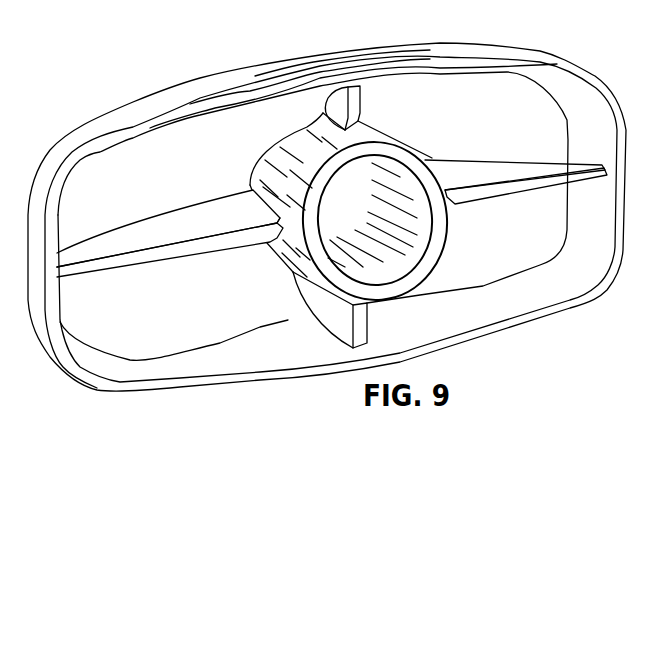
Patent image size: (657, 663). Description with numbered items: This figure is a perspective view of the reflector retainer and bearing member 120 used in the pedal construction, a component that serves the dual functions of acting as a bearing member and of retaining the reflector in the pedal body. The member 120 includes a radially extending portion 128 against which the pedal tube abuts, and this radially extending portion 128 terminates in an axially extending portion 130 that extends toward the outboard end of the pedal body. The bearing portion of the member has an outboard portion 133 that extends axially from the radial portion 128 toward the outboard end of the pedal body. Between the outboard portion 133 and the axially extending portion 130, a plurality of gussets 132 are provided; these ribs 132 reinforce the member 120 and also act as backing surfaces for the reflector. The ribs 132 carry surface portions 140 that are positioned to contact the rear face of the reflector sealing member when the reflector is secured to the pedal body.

The reflector retainer and bearing member 120 is at (297, 36).
The radially extending portion 128 is at (422, 117).
The axially extending portion 130 is at (523, 297).
The gussets 132 is at (343, 110).
The outboard portion 133 is at (438, 249).
The surface portions 140 is at (330, 112).